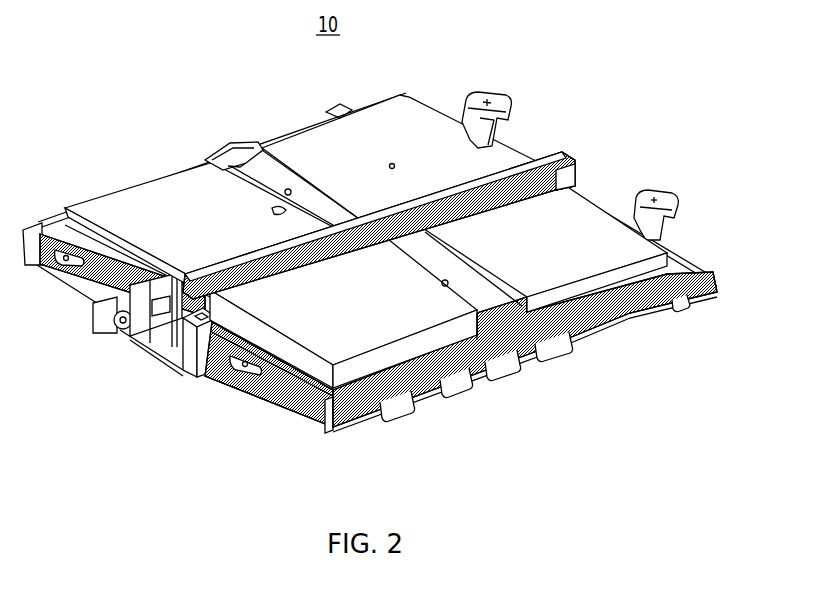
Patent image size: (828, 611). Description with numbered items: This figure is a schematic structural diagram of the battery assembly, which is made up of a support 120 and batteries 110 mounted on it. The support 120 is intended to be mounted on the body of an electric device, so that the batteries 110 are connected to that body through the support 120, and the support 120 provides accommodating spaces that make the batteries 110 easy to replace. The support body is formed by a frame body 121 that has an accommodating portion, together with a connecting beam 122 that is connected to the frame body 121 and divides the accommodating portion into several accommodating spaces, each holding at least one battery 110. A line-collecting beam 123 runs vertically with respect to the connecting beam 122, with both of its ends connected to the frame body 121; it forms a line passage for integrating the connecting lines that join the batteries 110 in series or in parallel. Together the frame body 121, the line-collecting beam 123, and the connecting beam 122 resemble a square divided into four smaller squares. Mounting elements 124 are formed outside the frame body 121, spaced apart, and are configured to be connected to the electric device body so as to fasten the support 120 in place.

The battery 110 is at (580, 220).
The support 120 is at (300, 422).
The frame body 121 is at (440, 380).
The connecting beam 122 is at (245, 162).
The line-collecting beam 123 is at (543, 150).
The mounting element 124 is at (486, 100).